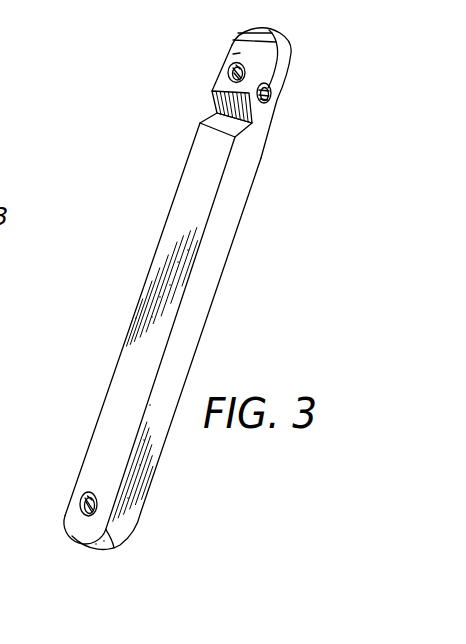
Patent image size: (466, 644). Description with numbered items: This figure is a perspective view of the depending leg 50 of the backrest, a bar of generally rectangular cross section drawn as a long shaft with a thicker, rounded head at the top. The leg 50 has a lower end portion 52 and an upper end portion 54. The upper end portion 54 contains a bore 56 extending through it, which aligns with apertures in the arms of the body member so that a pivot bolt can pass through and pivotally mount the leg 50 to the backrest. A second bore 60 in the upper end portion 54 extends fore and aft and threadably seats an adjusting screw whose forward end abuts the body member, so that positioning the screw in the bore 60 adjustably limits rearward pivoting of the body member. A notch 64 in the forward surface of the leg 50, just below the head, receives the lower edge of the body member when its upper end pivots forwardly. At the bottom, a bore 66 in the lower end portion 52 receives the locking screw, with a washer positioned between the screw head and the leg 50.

The depending leg 50 is at (221, 324).
The lower end portion 52 is at (137, 503).
The upper end portion 54 is at (269, 132).
The bore 56 is at (272, 97).
The second bore 60 is at (231, 63).
The notch 64 is at (216, 122).
The bore 66 is at (80, 497).